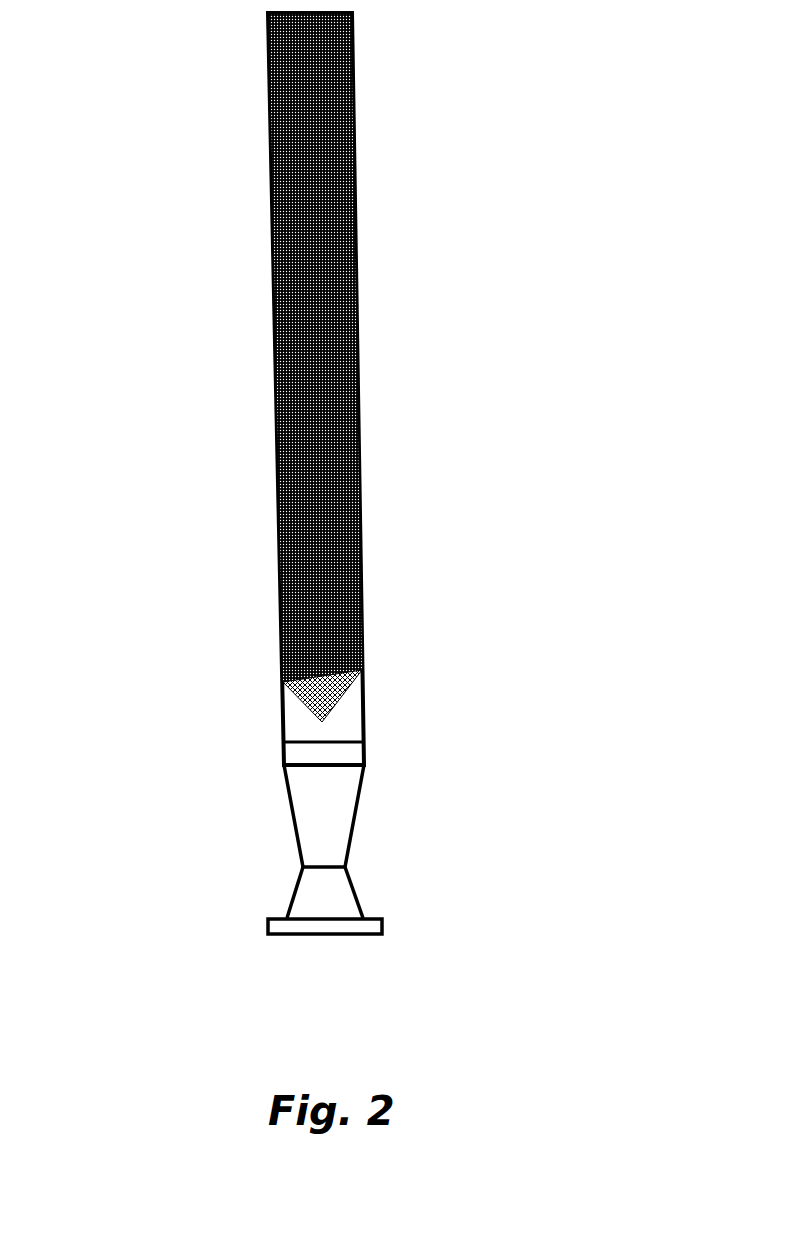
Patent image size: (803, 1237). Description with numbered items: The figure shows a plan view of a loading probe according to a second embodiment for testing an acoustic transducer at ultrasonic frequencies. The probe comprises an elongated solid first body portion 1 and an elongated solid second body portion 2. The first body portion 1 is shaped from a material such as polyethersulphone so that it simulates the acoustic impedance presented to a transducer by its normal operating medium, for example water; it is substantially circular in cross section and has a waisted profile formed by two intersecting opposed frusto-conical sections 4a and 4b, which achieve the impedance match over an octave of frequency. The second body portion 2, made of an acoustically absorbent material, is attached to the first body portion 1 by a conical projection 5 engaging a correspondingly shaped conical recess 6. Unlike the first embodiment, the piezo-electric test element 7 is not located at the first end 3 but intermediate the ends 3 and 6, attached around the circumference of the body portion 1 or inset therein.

The first body portion 1 is at (377, 512).
The second body portion 2 is at (378, 289).
The first end 3 is at (290, 927).
The frusto-conical section 4a is at (338, 803).
The frusto-conical section 4b is at (338, 892).
The projection 5 is at (353, 668).
The recess 6 is at (343, 700).
The piezo-electric test element 7 is at (298, 755).